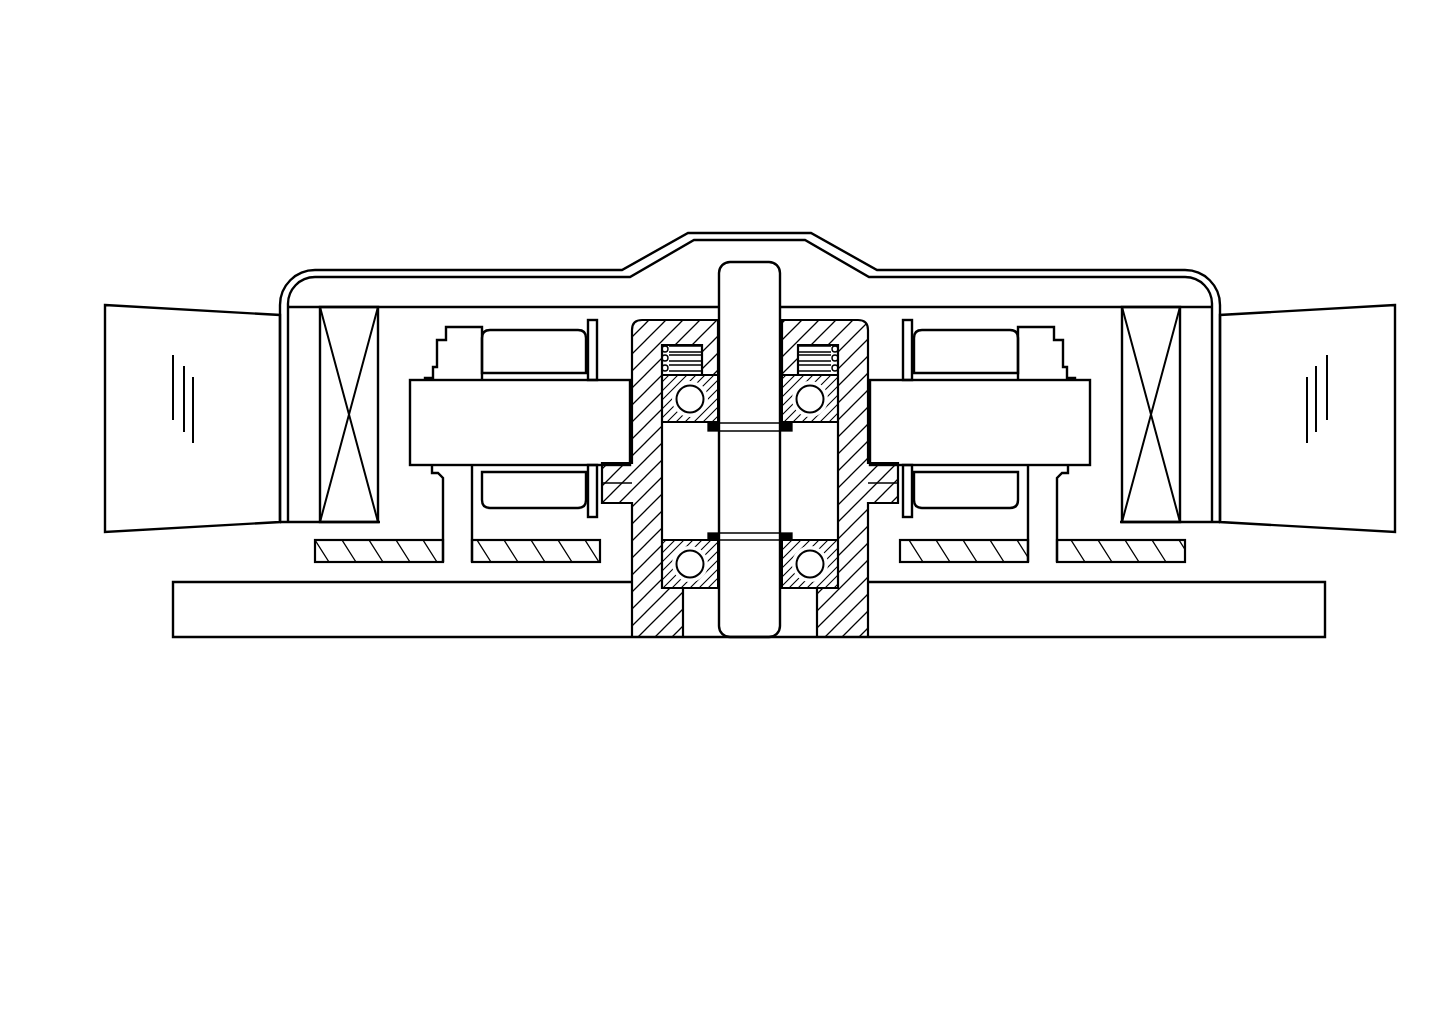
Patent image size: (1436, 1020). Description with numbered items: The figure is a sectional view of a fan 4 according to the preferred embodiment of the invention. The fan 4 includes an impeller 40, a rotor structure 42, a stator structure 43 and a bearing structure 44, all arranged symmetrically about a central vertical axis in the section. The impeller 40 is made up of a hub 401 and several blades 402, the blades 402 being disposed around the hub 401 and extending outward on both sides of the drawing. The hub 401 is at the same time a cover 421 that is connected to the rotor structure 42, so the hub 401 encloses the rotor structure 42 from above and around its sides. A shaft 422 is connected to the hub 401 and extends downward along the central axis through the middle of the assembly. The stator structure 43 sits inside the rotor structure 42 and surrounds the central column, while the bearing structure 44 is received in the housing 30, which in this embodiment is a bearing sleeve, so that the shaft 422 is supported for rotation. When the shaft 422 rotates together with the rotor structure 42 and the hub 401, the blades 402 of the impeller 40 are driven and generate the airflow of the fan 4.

The fan 4 is at (213, 72).
The impeller 40 is at (365, 136).
The hub 401 is at (377, 270).
The blades 402 is at (221, 320).
The rotor structure 42 is at (700, 146).
The cover 421 is at (571, 290).
The shaft 422 is at (743, 268).
The stator structure 43 is at (960, 342).
The bearing structure 44 is at (831, 425).
The housing 30 is at (660, 640).